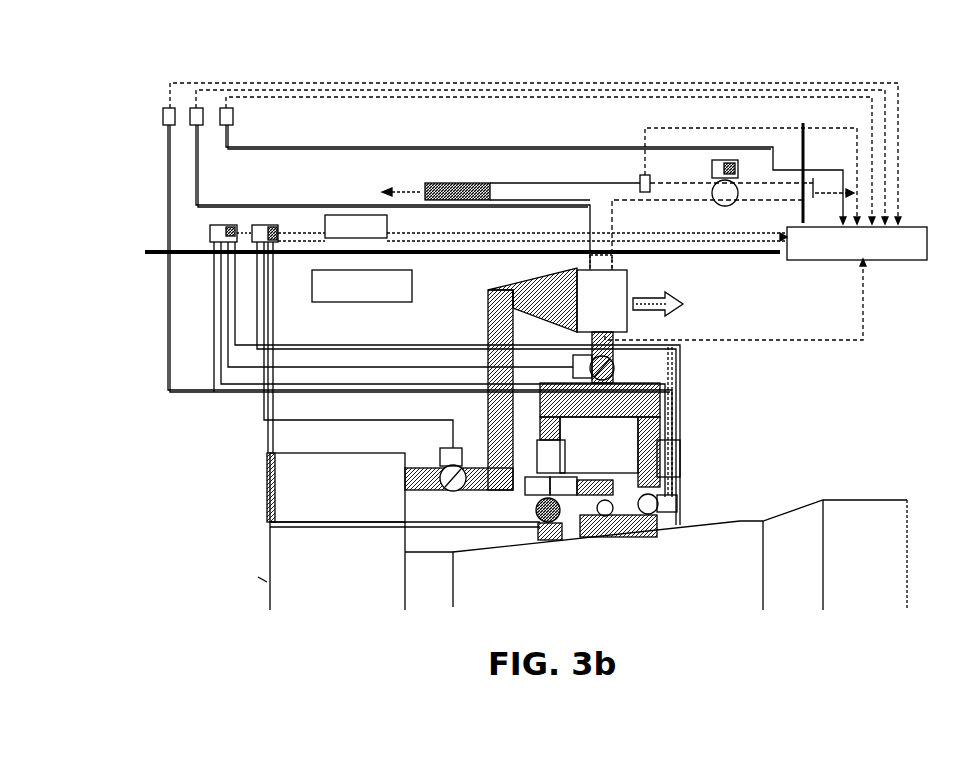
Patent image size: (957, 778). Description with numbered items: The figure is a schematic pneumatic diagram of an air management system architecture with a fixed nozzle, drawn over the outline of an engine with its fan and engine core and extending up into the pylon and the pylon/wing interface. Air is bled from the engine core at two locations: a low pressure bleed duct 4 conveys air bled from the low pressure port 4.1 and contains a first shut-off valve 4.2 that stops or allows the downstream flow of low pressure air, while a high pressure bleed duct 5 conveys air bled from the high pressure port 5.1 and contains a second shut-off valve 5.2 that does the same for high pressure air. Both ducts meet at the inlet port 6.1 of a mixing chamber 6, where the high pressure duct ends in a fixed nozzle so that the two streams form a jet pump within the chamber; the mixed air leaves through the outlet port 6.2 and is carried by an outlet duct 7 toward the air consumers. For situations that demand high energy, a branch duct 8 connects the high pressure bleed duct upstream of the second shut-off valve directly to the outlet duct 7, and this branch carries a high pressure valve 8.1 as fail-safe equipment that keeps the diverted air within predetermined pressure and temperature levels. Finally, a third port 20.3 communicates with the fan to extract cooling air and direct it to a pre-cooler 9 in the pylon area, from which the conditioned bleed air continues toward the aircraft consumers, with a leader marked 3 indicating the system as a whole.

The bleed air system 3 is at (143, 98).
The third port 20.3 is at (400, 478).
The outlet port 6.2 is at (540, 447).
The mixing chamber 6 is at (540, 457).
The inlet port 6.1 is at (530, 494).
The pre-cooler 9 is at (640, 284).
The outlet duct 7 is at (660, 384).
The branch duct 8 is at (653, 430).
The high pressure valve 8.1 is at (684, 502).
The first shut-off valve 4.2 is at (537, 516).
The low pressure port 4.1 is at (552, 563).
The second shut-off valve 5.2 is at (597, 540).
The high pressure bleed duct 5 is at (632, 537).
The high pressure port 5.1 is at (660, 552).
The low pressure bleed duct 4 is at (582, 555).